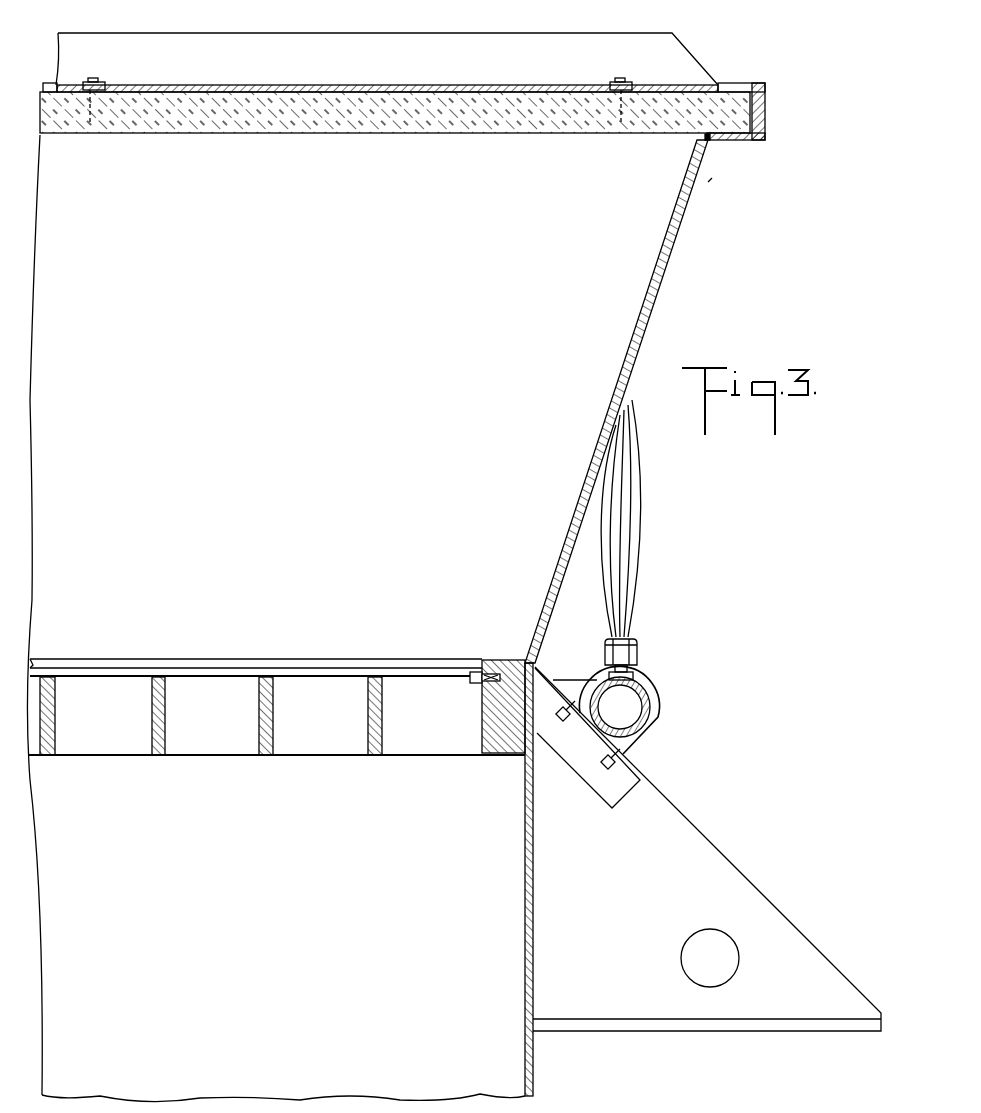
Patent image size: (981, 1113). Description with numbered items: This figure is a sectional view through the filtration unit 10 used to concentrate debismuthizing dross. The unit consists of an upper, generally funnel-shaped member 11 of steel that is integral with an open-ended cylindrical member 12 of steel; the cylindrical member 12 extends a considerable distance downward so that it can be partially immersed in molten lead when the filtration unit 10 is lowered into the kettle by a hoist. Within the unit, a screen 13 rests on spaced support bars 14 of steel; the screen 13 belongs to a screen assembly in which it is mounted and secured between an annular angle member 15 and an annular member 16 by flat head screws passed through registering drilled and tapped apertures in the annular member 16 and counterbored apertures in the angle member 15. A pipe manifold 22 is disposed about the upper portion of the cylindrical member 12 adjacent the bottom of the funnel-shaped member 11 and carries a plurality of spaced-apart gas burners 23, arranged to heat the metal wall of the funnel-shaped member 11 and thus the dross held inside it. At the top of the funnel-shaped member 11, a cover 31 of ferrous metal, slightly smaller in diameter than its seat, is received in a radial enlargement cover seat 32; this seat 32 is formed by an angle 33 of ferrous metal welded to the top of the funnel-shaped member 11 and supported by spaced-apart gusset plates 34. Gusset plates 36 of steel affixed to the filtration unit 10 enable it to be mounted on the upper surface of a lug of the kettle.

The filtration unit 10 is at (546, 646).
The funnel-shaped member 11 is at (655, 297).
The cylindrical member 12 is at (535, 905).
The screen 13 is at (353, 659).
The support bars 14 is at (155, 712).
The annular angle member 15 is at (478, 686).
The annular member 16 is at (481, 666).
The pipe manifold 22 is at (648, 692).
The gas burners 23 is at (638, 648).
The cover 31 is at (740, 82).
The cover seat 32 is at (710, 142).
The angle 33 is at (680, 230).
The gusset plates 34 is at (708, 182).
The gusset plates 36 is at (707, 855).